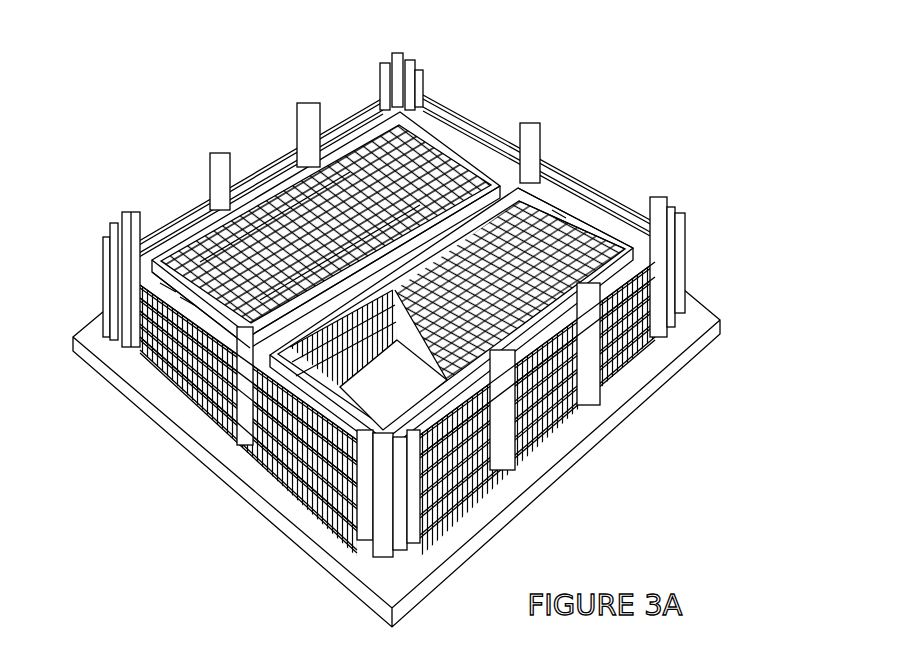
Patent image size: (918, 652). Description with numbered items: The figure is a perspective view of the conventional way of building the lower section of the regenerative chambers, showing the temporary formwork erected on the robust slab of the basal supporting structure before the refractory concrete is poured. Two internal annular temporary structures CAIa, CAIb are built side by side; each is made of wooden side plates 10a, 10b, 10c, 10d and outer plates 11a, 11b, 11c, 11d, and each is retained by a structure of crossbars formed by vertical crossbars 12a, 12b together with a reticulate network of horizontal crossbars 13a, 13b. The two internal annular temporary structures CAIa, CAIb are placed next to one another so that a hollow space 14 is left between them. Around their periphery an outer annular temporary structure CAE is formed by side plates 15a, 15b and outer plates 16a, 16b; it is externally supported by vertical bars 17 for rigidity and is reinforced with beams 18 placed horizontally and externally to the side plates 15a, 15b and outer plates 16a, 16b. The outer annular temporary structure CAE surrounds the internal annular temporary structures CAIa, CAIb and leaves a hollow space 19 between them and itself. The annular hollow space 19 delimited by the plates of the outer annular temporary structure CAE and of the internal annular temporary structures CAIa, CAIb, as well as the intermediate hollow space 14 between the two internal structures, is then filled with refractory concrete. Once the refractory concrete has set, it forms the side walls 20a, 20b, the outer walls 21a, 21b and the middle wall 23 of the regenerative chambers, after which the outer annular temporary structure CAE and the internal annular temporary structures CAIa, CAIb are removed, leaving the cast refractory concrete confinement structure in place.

The side plate 10a is at (210, 223).
The side plate 10b is at (480, 183).
The side plate 10c is at (493, 190).
The side plate 10d is at (617, 267).
The outer plate 11a is at (160, 282).
The outer plate 11b is at (457, 133).
The outer plate 11c is at (290, 372).
The outer plate 11d is at (537, 183).
The vertical crossbar 12a is at (162, 243).
The vertical crossbar 12b is at (420, 417).
The reticulate network of horizontal crossbars 13a is at (282, 207).
The reticulate network of horizontal crossbars 13b is at (617, 265).
The hollow space 14 is at (420, 238).
The side plate 15a is at (247, 183).
The side plate 15b is at (653, 290).
The outer plate 16a is at (185, 300).
The outer plate 16b is at (557, 213).
The vertical bar 17 is at (337, 423).
The beam 18 is at (250, 327).
The hollow space 19 is at (345, 497).
The side wall 20a is at (170, 249).
The side wall 20b is at (463, 397).
The outer wall 21a is at (293, 393).
The outer wall 21b is at (490, 150).
The middle wall 23 is at (355, 283).
The internal annular temporary structure CAIa is at (200, 293).
The internal annular temporary structure CAIb is at (533, 337).
The outer annular temporary structure CAE is at (345, 525).